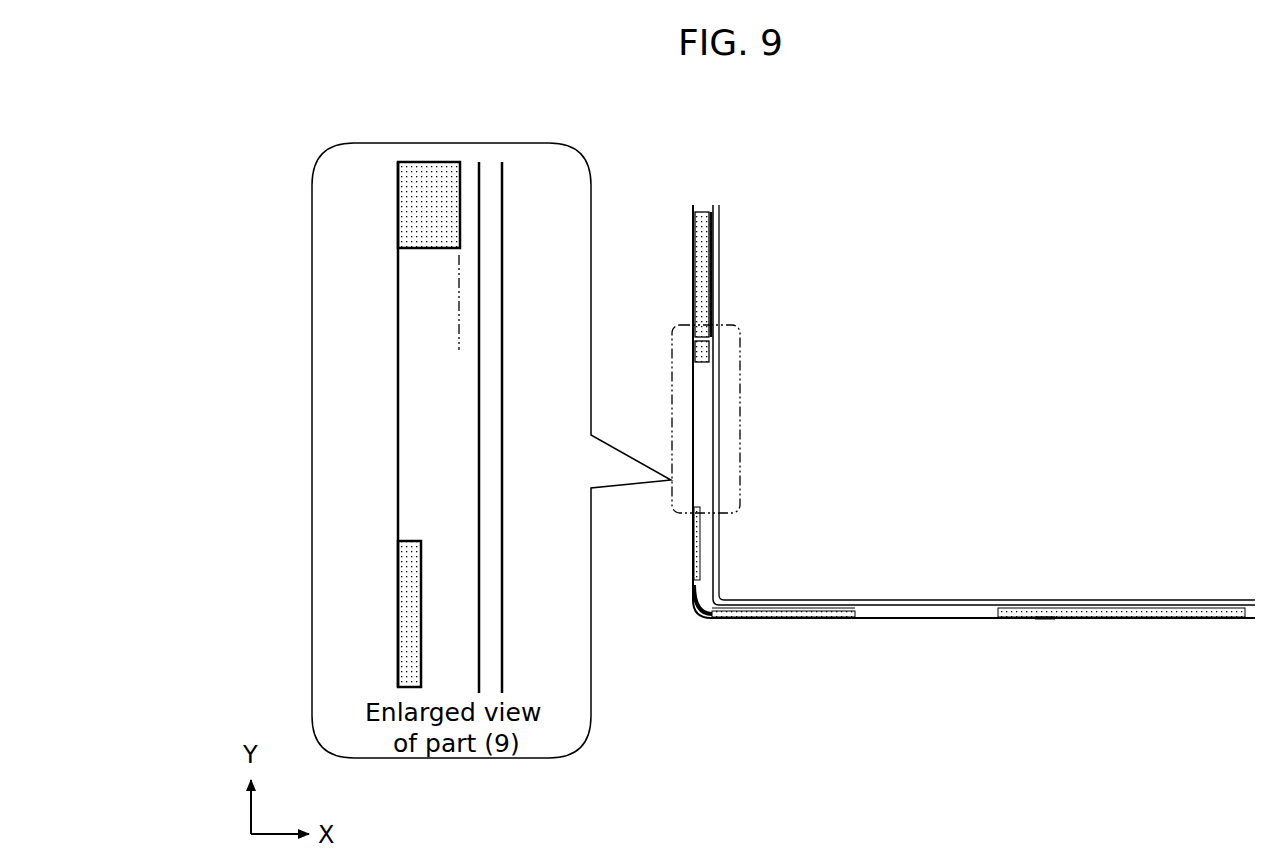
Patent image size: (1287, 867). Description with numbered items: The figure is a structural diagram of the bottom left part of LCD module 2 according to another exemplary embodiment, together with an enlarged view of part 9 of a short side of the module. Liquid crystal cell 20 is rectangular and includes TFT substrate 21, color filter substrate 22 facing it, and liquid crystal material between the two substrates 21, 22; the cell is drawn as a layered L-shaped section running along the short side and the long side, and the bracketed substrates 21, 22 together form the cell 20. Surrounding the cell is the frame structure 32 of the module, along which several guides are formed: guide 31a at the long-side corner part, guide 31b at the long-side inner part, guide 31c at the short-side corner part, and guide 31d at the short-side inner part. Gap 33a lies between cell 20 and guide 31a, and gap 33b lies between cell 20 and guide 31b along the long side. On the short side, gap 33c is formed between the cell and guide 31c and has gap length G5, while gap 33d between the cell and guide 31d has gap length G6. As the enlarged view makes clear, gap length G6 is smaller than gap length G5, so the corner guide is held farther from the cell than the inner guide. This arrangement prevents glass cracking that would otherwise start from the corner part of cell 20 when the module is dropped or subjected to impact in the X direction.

The LCD module 2 is at (927, 318).
The part 9 is at (744, 482).
The liquid crystal cell 20 is at (636, 688).
The TFT substrate 21 is at (485, 663).
The color filter substrate 22 is at (543, 647).
The guide 31a is at (760, 618).
The guide 31b is at (1090, 612).
The guide 31c is at (405, 572).
The guide 31d is at (422, 213).
The frame plate 32 is at (425, 410).
The gap 33a is at (760, 607).
The gap 33b is at (1020, 605).
The gap 33c is at (446, 595).
The gap 33d is at (474, 216).
The gap length G5 is at (477, 563).
The gap length G6 is at (520, 285).